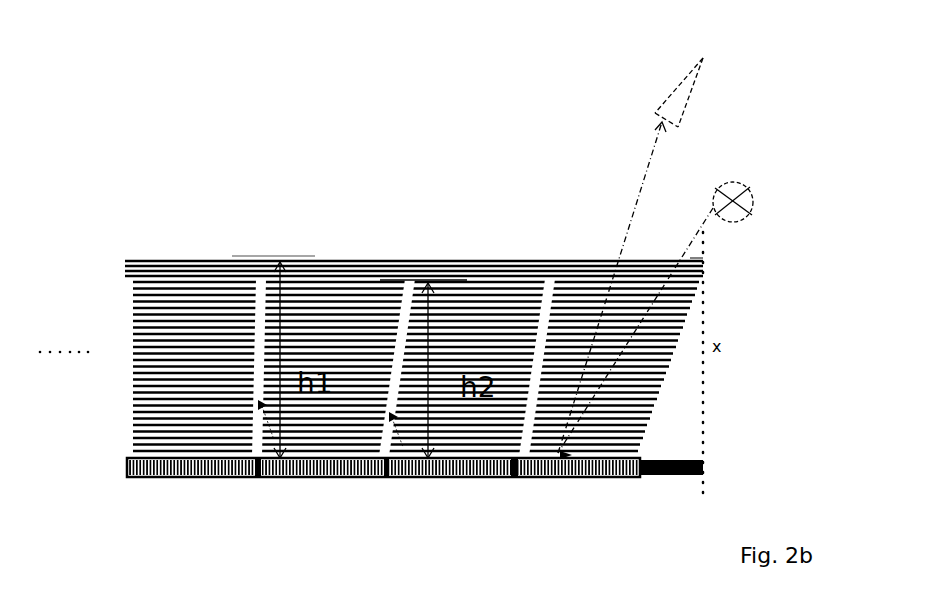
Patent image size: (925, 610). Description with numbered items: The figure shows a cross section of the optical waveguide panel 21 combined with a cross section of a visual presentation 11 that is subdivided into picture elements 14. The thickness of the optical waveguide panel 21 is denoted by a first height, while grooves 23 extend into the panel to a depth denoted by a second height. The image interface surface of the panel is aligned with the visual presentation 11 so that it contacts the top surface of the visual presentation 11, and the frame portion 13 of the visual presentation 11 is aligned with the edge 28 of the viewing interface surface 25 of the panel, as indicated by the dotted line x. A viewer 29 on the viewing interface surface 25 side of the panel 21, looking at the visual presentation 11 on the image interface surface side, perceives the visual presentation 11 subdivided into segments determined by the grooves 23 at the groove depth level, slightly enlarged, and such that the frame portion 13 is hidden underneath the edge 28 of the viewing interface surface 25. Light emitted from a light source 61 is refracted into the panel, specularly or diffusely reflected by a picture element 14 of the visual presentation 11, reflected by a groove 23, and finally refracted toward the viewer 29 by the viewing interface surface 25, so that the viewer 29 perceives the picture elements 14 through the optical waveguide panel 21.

The visual presentation 11 is at (124, 497).
The frame portion 13 is at (692, 465).
The picture elements 14 is at (177, 521).
The optical waveguide panel 21 is at (106, 218).
The grooves 23 is at (294, 480).
The viewing interface surface 25 is at (198, 248).
The edge 28 is at (708, 263).
The viewer 29 is at (708, 58).
The light source 61 is at (762, 205).